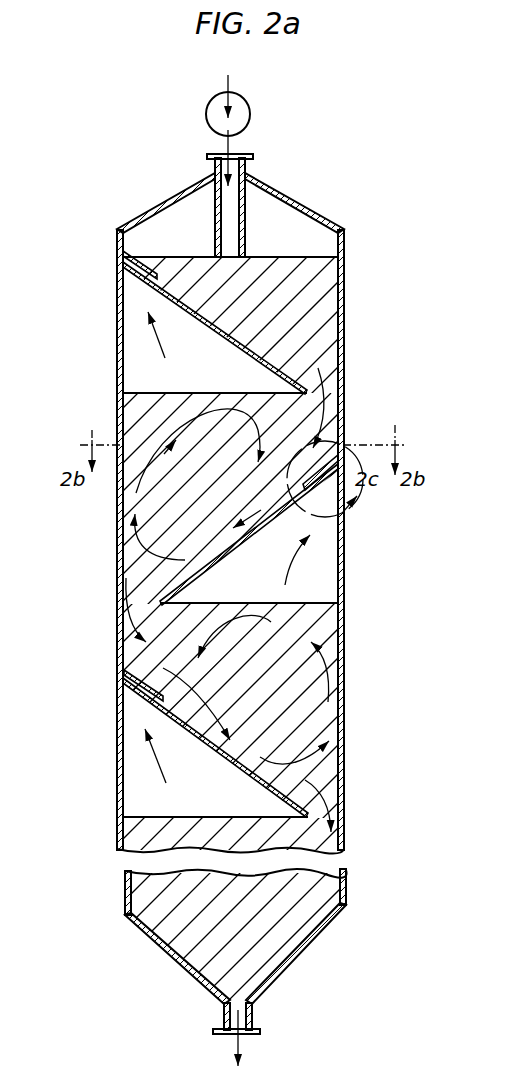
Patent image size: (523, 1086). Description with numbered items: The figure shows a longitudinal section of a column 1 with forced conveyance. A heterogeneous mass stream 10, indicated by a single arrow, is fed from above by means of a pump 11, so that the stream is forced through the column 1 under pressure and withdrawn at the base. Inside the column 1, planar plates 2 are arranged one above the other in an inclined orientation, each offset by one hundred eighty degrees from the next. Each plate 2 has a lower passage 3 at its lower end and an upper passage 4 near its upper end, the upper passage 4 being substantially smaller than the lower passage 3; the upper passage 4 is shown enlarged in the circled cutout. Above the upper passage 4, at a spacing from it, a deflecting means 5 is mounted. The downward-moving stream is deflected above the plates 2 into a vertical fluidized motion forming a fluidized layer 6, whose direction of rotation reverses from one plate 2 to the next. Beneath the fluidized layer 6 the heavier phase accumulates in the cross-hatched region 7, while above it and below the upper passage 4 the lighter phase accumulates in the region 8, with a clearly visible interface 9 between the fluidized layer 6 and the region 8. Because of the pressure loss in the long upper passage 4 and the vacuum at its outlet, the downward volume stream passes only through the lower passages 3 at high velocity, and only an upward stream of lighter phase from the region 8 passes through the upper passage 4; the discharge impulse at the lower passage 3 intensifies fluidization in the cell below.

The column 1 is at (118, 343).
The plates 2 is at (230, 343).
The lower passage 3 is at (332, 397).
The upper passage 4 is at (120, 281).
The deflecting means 5 is at (143, 262).
The fluidized layer 6 is at (266, 704).
The region of heavier phase / lower enrichment zone 7 is at (327, 795).
The region of lighter phase / upper enrichment zone 8 is at (320, 565).
The interface 9 is at (168, 390).
The heterogeneous mass stream 10 is at (237, 146).
The pump 11 is at (251, 113).